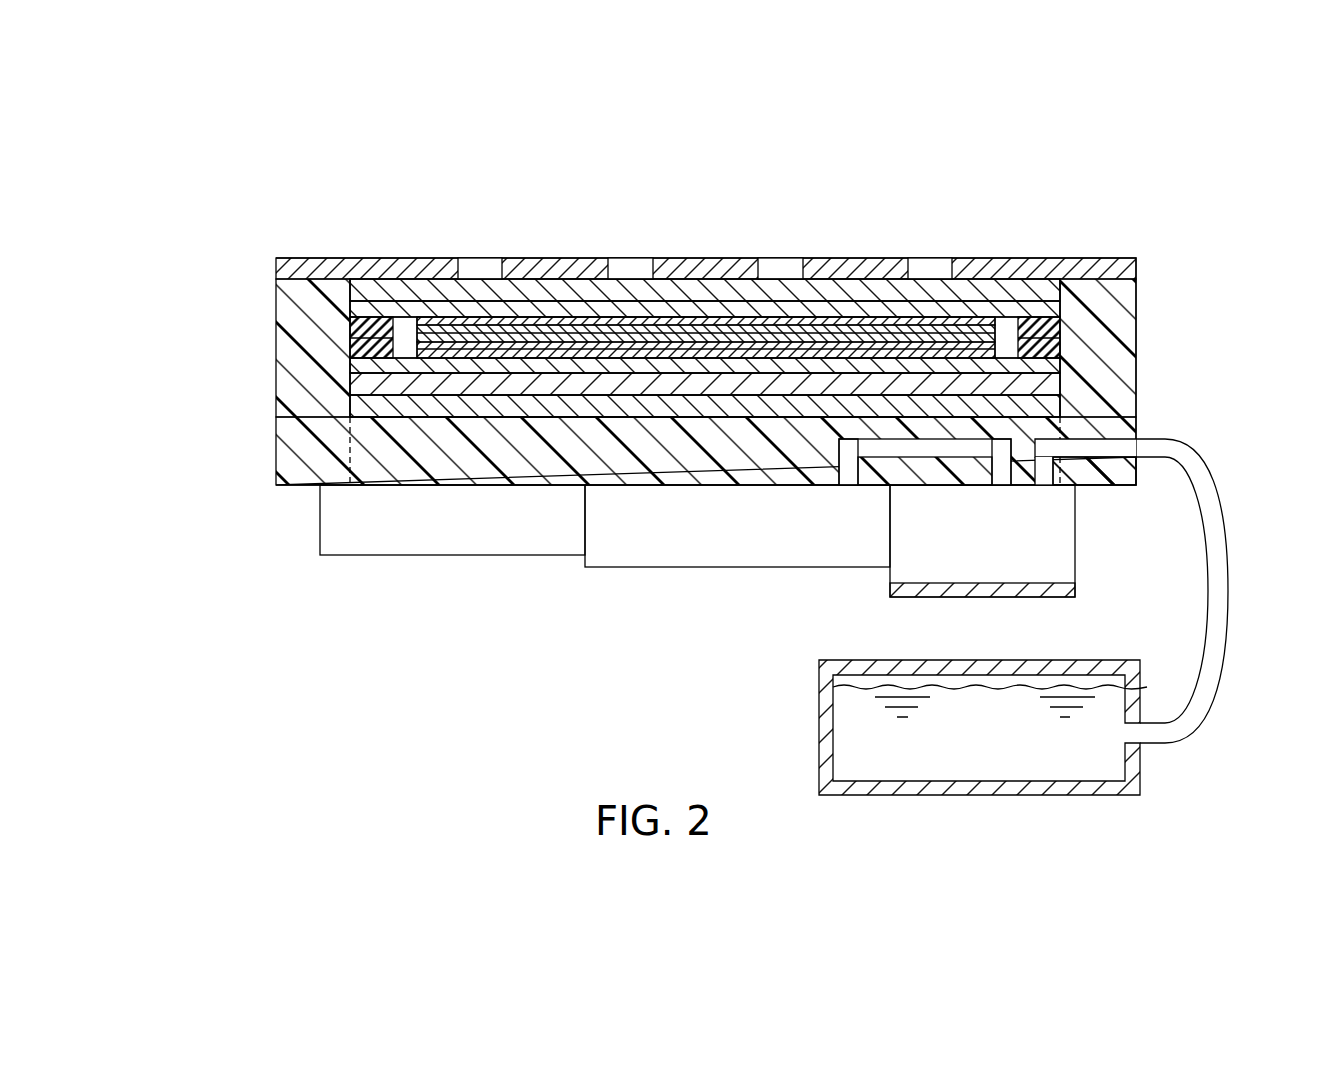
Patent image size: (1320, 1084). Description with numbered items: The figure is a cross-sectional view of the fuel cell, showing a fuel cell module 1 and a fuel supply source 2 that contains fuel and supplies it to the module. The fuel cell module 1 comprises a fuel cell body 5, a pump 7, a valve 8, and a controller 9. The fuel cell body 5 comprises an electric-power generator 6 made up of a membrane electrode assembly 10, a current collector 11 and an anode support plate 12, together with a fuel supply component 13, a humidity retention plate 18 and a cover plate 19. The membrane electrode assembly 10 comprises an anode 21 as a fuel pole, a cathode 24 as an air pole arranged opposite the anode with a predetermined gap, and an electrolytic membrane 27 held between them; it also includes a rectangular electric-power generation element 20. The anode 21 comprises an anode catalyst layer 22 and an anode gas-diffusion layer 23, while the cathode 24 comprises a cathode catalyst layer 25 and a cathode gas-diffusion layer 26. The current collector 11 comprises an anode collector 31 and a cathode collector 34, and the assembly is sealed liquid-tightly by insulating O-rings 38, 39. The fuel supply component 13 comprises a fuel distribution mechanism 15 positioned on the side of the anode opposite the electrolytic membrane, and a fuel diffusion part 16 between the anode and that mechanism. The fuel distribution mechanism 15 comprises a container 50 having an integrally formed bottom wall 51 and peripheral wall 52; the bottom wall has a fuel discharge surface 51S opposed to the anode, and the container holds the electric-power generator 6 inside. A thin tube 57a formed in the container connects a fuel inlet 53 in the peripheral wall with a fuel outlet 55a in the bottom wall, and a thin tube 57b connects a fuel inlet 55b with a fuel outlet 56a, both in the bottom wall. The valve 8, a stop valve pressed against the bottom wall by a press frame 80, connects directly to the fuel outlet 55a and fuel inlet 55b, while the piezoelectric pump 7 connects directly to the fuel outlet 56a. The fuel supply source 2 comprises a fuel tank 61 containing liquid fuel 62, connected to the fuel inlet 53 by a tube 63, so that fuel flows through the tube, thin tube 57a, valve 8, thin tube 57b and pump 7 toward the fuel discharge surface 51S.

The fuel cell module 1 is at (1140, 178).
The fuel supply source 2 is at (988, 806).
The fuel cell body 5 is at (290, 500).
The electric-power generator 6 is at (1089, 337).
The pump 7 is at (613, 568).
The valve 8 is at (915, 570).
The controller 9 is at (373, 556).
The membrane electrode assembly 10 is at (166, 267).
The current collector 11 is at (595, 213).
The anode support plate 12 is at (1050, 388).
The fuel supply component 13 is at (550, 597).
The fuel distribution mechanism 15 is at (477, 498).
The fuel diffusion part 16 is at (540, 408).
The humidity retention plate 18 is at (1050, 291).
The cover plate 19 is at (1112, 270).
The electric-power generation element 20 is at (922, 298).
The anode 21 is at (224, 365).
The anode catalyst layer 22 is at (375, 366).
The anode gas-diffusion layer 23 is at (385, 385).
The cathode 24 is at (224, 255).
The cathode catalyst layer 25 is at (440, 314).
The cathode gas-diffusion layer 26 is at (416, 298).
The electrolytic membrane 27 is at (388, 322).
The anode collector 31 is at (625, 368).
The cathode collector 34 is at (665, 310).
The O-ring 38 is at (1050, 349).
The O-ring 39 is at (1047, 319).
The container 50 is at (243, 520).
The bottom wall 51 is at (303, 470).
The fuel discharge surface 51S is at (710, 418).
The peripheral wall 52 is at (377, 447).
The fuel inlet 53 is at (1145, 434).
The fuel outlet 55a is at (1049, 485).
The fuel inlet 55b is at (1006, 485).
The fuel outlet 56a is at (852, 485).
The thin tube 57a is at (1108, 458).
The thin tube 57b is at (937, 458).
The fuel tank 61 is at (915, 797).
The fuel 62 is at (1062, 765).
The tube 63 is at (1230, 610).
The press frame 80 is at (1076, 590).